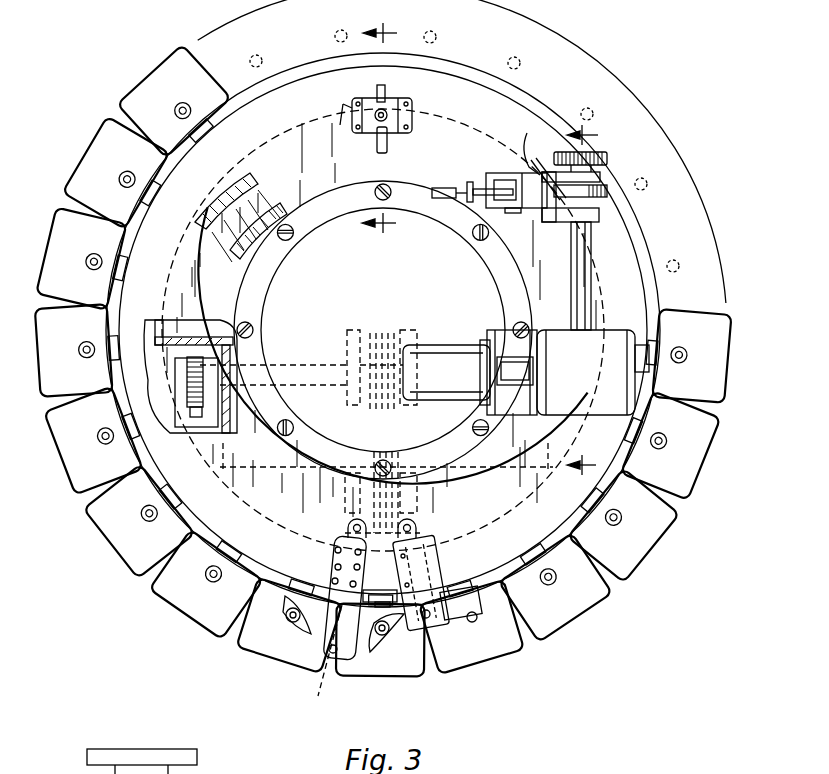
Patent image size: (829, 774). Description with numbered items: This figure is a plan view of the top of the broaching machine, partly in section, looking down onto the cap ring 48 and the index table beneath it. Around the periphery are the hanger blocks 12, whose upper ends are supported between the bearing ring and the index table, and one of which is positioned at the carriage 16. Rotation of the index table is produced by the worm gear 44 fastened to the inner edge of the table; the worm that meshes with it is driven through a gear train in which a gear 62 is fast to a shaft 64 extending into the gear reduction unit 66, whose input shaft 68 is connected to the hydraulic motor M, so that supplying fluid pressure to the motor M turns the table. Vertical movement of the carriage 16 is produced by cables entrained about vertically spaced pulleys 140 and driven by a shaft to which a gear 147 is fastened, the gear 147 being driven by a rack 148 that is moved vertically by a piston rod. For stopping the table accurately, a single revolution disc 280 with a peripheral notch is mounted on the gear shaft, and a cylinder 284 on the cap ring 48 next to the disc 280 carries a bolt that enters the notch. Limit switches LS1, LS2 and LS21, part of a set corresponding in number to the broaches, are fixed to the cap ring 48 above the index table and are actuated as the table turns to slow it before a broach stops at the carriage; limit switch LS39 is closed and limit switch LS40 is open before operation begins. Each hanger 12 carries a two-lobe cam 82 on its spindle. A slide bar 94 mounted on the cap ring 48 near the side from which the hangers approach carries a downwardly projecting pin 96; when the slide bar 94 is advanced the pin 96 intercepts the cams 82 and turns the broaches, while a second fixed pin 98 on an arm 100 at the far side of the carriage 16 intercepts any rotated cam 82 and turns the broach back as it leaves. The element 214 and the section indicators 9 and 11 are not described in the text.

The hanger block 12 is at (686, 486).
The carriage 16 is at (433, 521).
The cap ring 48 is at (289, 102).
The section line 11- 11 is at (389, 128).
The section line 9- 9 is at (588, 300).
The worm gear 44 is at (282, 172).
The gear 147 is at (178, 365).
The rack 148 is at (188, 418).
The pulleys 140 is at (384, 334).
The hydraulic motor M is at (456, 381).
The input shaft 68 is at (537, 366).
The gear reduction unit 66 is at (585, 381).
The shaft 64 is at (592, 256).
The single revolution disc 280 is at (603, 201).
The gear 62 is at (600, 148).
The limit switch LS39 is at (496, 176).
The cylinder 284 is at (532, 158).
The limit switch LS40 is at (446, 186).
The limit switch LS21 is at (198, 111).
The limit switch LS1 is at (150, 173).
The limit switch LS2 is at (112, 273).
The arm 100 is at (333, 635).
The second fixed pin 98 is at (322, 662).
The slide bar 94 is at (409, 627).
The bracket 214 is at (440, 559).
The pin 96 is at (442, 620).
The two-lobe cam 82 is at (299, 629).